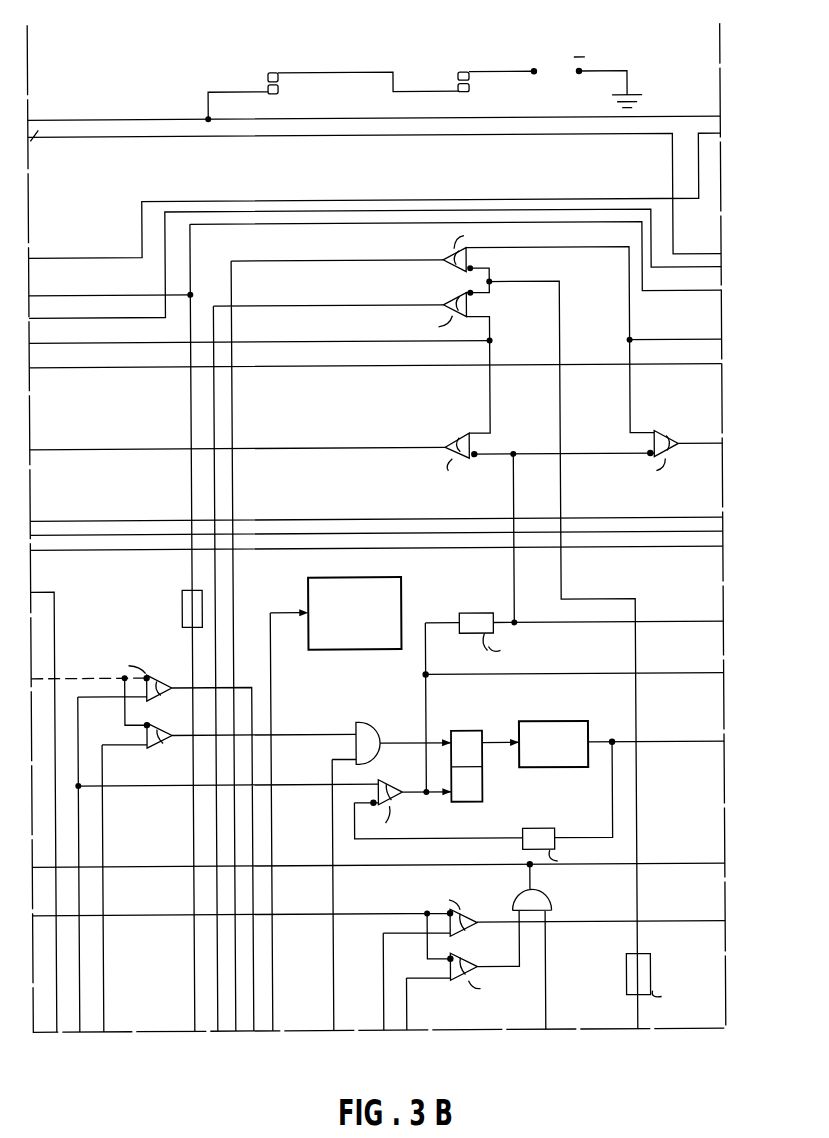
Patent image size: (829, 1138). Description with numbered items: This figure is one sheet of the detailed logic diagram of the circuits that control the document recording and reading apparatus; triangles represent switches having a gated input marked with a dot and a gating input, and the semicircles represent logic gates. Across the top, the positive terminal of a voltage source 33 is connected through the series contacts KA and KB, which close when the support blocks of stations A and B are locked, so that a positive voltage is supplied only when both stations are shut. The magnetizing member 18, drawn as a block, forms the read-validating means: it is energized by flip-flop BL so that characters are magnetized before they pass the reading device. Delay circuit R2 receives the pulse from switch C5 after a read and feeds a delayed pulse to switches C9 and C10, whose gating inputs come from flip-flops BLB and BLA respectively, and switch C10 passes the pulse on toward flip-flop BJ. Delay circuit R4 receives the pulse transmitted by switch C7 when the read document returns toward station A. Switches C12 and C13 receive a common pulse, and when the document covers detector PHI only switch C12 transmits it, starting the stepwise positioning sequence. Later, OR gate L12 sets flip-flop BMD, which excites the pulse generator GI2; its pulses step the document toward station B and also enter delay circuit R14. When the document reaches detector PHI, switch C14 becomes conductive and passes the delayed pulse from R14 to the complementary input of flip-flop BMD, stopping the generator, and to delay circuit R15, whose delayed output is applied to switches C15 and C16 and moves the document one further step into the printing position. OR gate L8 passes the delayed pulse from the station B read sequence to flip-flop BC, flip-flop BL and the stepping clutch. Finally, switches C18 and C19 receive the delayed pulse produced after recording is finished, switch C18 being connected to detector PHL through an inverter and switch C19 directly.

The voltage source 33 is at (424, 67).
The magnetizing member 18 is at (372, 584).
The electrical contact KA is at (281, 69).
The electrical contact KB is at (471, 68).
The switch C9 is at (533, 628).
The switch C10 is at (439, 350).
The switch C15 is at (538, 515).
The switch C16 is at (675, 424).
The delay circuit R4 is at (181, 611).
The switch C12 is at (159, 676).
The switch C13 is at (164, 730).
The delay circuit R15 is at (492, 619).
The OR gate L12 is at (372, 730).
The flip-flop BMD is at (472, 763).
The switch C14 is at (398, 776).
The pulse generator GI-2 GI2 is at (538, 728).
The delay circuit R14 is at (546, 832).
The OR gate L8 is at (548, 898).
The switch C18 is at (462, 916).
The switch C19 is at (480, 958).
The delay circuit R2 is at (626, 980).